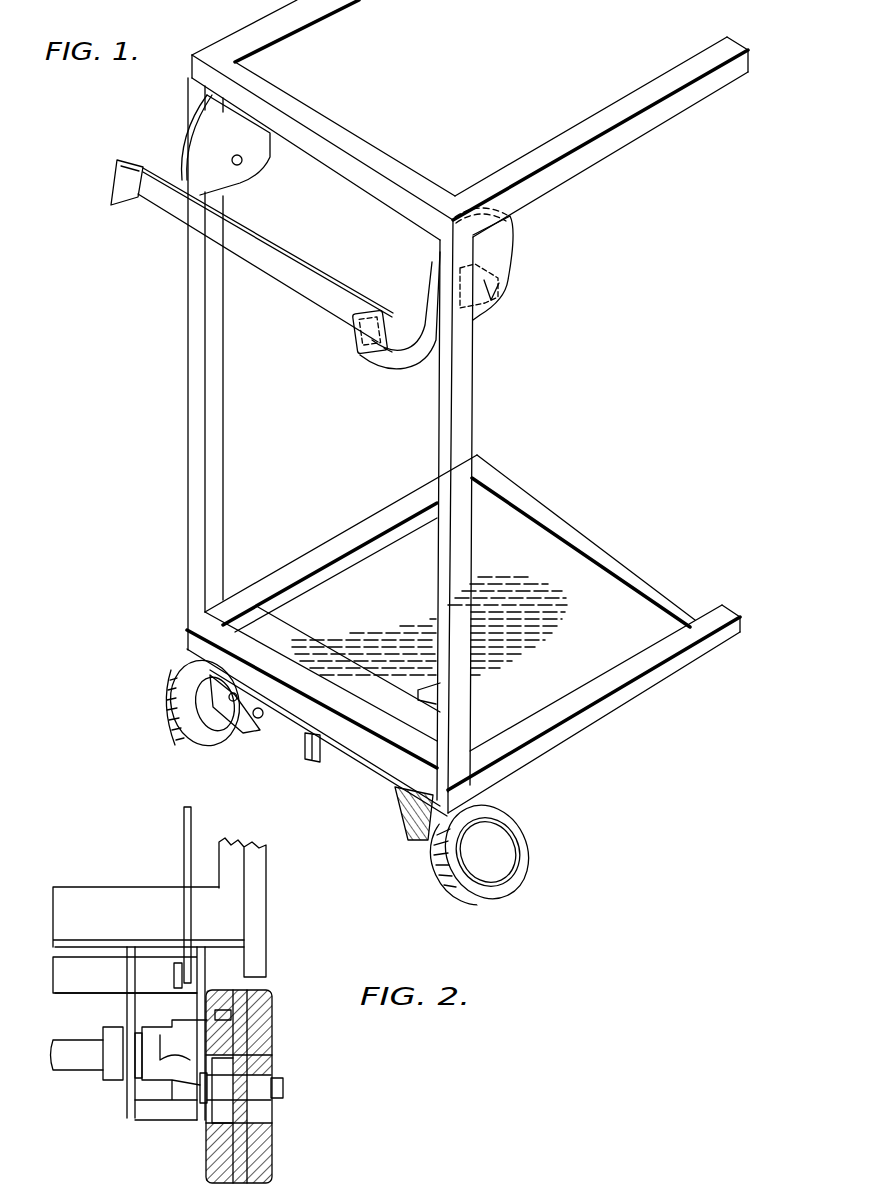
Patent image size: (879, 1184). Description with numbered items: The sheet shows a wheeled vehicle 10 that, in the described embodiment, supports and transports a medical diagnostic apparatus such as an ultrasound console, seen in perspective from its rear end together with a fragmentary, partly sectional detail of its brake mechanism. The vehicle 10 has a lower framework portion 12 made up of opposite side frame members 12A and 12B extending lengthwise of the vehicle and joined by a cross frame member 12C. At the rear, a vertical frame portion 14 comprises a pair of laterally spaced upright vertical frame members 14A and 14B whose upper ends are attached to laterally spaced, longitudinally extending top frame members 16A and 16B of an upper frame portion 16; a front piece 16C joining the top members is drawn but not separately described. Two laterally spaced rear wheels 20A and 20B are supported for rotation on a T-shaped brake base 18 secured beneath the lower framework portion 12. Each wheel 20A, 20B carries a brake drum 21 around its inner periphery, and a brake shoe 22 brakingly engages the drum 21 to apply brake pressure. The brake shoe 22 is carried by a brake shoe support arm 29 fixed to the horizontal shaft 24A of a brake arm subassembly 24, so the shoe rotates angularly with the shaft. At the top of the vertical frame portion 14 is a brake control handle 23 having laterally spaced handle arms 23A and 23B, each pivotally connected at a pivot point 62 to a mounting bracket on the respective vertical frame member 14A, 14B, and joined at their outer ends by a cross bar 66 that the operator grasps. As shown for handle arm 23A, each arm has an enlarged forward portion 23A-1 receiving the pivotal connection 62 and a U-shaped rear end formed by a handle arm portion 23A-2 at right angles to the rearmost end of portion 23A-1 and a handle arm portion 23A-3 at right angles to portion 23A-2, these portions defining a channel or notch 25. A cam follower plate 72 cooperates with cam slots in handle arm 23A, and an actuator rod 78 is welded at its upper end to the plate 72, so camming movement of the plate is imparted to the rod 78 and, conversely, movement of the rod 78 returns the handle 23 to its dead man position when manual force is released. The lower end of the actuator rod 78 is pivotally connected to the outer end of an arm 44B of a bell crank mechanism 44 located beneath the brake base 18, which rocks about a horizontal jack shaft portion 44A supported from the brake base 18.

In FIG. 1, the wheeled vehicle 10 is at (157, 442).
In FIG. 1, the lower framework portion 12 is at (463, 635).
In FIG. 2, the lower framework portion 12 is at (278, 908).
In FIG. 1, the side frame member 12A is at (655, 677).
In FIG. 1, the side frame member 12B is at (350, 543).
In FIG. 1, the cross frame member 12C is at (538, 515).
In FIG. 1, the vertical frame portion 14 is at (285, 439).
In FIG. 1, the vertical frame member 14A is at (437, 441).
In FIG. 2, the vertical frame member 14A is at (258, 947).
In FIG. 1, the vertical frame member 14B is at (200, 373).
In FIG. 1, the upper frame portion 16 is at (457, 120).
In FIG. 1, the top frame member 16A is at (603, 143).
In FIG. 1, the top frame member 16B is at (260, 24).
In FIG. 1, the handle cross member 16C is at (352, 145).
In FIG. 1, the brake base 18 is at (552, 575).
In FIG. 1, the wheel 20A is at (526, 860).
In FIG. 2, the wheel 20A is at (253, 1174).
In FIG. 1, the wheel 20B is at (183, 672).
In FIG. 2, the brake drum 21 is at (215, 1165).
In FIG. 2, the brake shoe 22 is at (232, 1015).
In FIG. 1, the brake control handle 23 is at (356, 250).
In FIG. 1, the handle arm 23A is at (495, 244).
In FIG. 1, the enlarged portion 23A-1 is at (505, 283).
In FIG. 1, the handle arm portion 23A-2 is at (397, 364).
In FIG. 1, the handle arm portion 23A-3 is at (357, 328).
In FIG. 1, the handle arm 23B is at (200, 137).
In FIG. 2, the brake arm subassembly 24 is at (46, 1054).
In FIG. 2, the horizontal shaft 24A is at (83, 1060).
In FIG. 1, the channel or notch 25 is at (390, 323).
In FIG. 2, the brake shoe support arm 29 is at (220, 1033).
In FIG. 2, the bell crank mechanism 44 is at (80, 975).
In FIG. 2, the jack shaft portion 44A is at (88, 993).
In FIG. 2, the arm 44B is at (175, 973).
In FIG. 1, the pivot point 62 is at (242, 165).
In FIG. 1, the cross bar 66 is at (290, 287).
In FIG. 1, the cam follower plate 72 is at (500, 303).
In FIG. 2, the actuator rod 78 is at (183, 852).